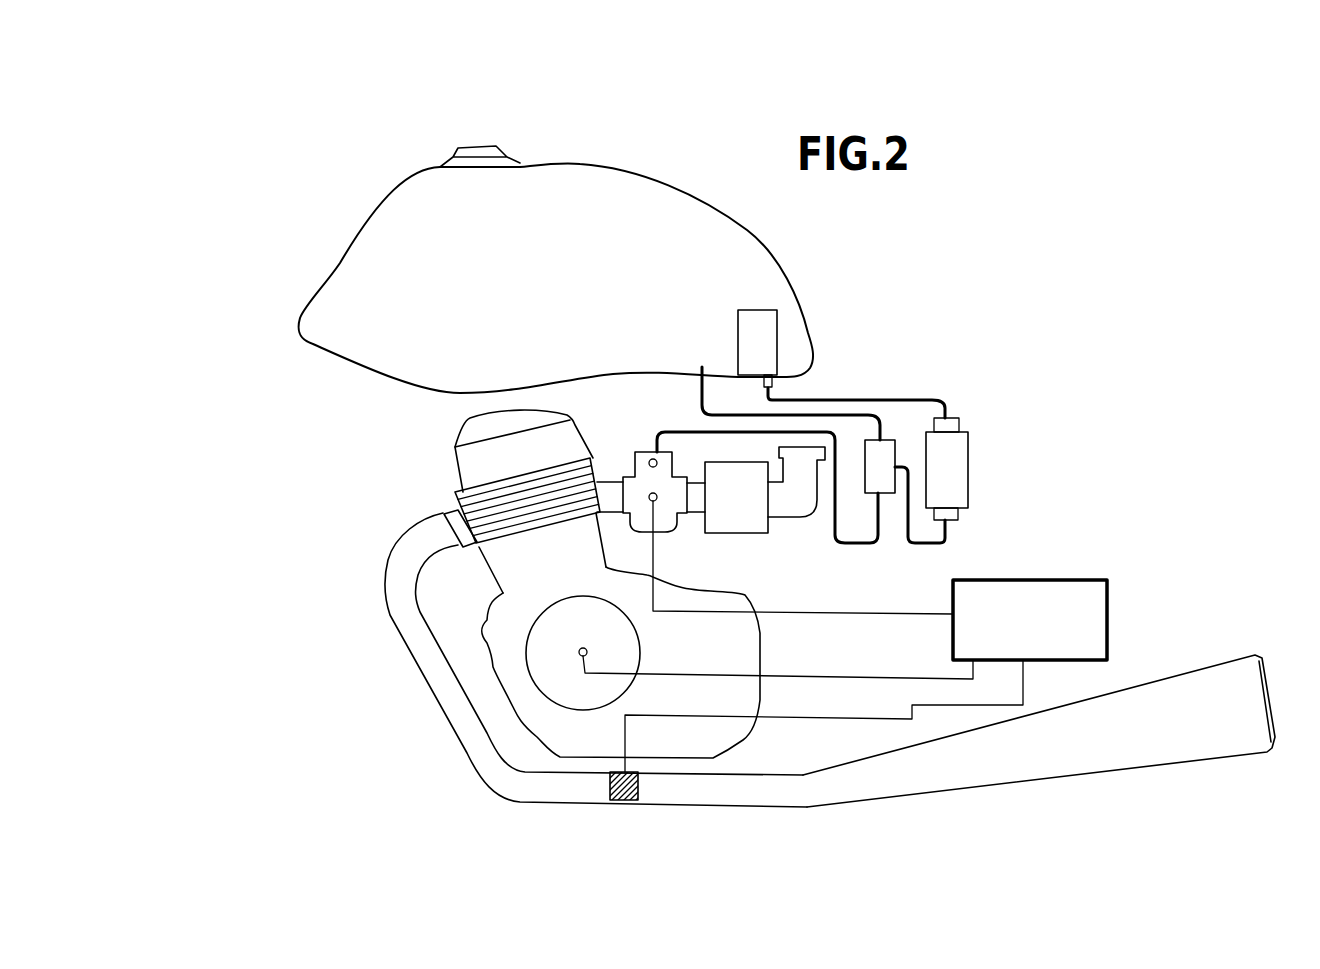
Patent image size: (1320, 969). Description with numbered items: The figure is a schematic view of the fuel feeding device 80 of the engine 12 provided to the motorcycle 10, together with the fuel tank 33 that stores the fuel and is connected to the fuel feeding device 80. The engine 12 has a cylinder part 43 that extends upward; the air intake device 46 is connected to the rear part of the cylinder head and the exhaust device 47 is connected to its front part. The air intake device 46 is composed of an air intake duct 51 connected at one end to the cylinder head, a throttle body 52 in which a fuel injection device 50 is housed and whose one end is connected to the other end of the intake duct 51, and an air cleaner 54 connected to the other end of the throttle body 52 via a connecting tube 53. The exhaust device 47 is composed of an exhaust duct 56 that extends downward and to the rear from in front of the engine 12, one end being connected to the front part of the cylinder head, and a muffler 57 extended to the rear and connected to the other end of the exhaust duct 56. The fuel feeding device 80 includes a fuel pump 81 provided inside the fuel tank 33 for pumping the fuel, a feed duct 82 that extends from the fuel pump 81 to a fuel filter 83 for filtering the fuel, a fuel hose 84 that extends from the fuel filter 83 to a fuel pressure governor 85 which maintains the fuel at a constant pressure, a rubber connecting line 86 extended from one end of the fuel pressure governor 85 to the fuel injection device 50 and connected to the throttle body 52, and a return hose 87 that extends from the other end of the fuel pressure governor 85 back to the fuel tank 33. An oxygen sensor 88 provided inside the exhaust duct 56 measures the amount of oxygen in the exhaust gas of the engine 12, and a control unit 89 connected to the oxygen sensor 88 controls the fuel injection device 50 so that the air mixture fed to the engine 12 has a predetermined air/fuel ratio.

The motorcycle 10 is at (346, 182).
The engine 12 is at (423, 483).
The fuel tank 33 is at (354, 284).
The cylinder part 43 is at (453, 444).
The air intake device 46 is at (807, 520).
The exhaust device 47 is at (830, 708).
The fuel injection device 50 is at (765, 498).
The air intake duct 51 is at (610, 497).
The throttle body 52 is at (632, 459).
The connecting tube 53 is at (692, 503).
The air cleaner 54 is at (753, 522).
The exhaust duct 56 is at (480, 770).
The muffler 57 is at (1222, 727).
The fuel feeding device 80 is at (953, 363).
The fuel pump 81 is at (762, 330).
The feed duct 82 is at (883, 457).
The fuel filter 83 is at (950, 463).
The fuel hose 84 is at (947, 533).
The fuel pressure governor 85 is at (883, 457).
The rubber connecting line 86 is at (857, 545).
The return hose 87 is at (837, 415).
The oxygen sensor 88 is at (625, 803).
The control unit 89 is at (1107, 632).